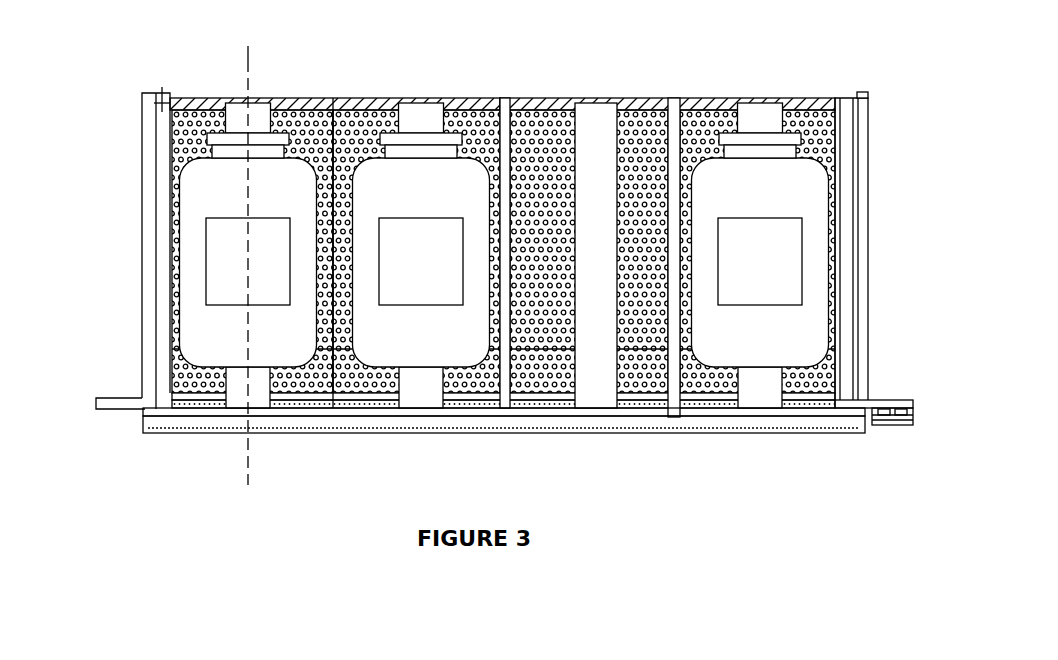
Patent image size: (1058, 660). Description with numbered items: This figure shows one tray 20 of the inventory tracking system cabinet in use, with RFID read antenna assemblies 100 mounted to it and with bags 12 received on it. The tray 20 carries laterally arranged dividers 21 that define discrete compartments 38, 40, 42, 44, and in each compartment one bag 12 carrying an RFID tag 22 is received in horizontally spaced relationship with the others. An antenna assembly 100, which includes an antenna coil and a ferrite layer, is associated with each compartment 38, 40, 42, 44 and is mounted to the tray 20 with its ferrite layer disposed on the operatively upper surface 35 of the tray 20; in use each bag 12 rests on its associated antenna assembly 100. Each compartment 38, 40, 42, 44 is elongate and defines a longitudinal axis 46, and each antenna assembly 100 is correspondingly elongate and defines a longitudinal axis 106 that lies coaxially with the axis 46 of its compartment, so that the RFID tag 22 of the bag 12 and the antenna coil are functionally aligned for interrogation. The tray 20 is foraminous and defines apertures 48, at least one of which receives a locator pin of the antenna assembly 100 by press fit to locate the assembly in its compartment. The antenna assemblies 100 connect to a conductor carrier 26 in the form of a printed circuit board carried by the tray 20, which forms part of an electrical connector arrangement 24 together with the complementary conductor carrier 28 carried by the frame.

The bag 12 is at (812, 236).
The tray 20 is at (870, 170).
The divider 21 is at (338, 148).
The RFID tag 22 is at (757, 262).
The electrical connector arrangement 24 is at (882, 446).
The conductor carrier 26 is at (300, 418).
The conductor carrier 28 is at (893, 410).
The upper surface 35 is at (866, 95).
The compartment 38 is at (188, 146).
The compartment 40 is at (353, 104).
The compartment 42 is at (650, 124).
The compartment 44 is at (703, 138).
The longitudinal axis 46 is at (247, 58).
The aperture 48 is at (806, 108).
The RFID read antenna assembly 100 is at (746, 379).
The longitudinal axis 106 is at (240, 267).